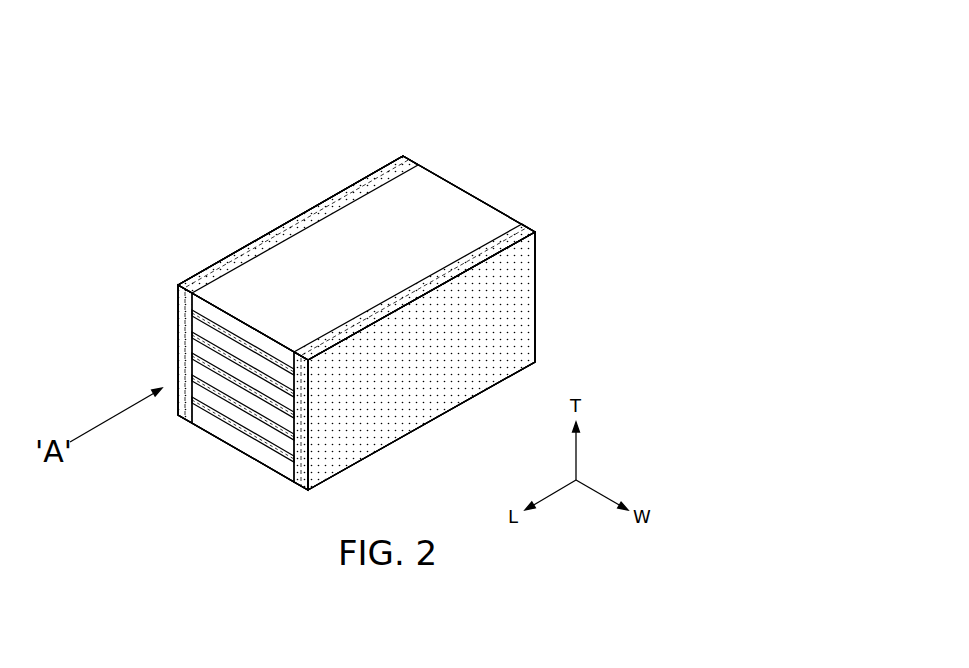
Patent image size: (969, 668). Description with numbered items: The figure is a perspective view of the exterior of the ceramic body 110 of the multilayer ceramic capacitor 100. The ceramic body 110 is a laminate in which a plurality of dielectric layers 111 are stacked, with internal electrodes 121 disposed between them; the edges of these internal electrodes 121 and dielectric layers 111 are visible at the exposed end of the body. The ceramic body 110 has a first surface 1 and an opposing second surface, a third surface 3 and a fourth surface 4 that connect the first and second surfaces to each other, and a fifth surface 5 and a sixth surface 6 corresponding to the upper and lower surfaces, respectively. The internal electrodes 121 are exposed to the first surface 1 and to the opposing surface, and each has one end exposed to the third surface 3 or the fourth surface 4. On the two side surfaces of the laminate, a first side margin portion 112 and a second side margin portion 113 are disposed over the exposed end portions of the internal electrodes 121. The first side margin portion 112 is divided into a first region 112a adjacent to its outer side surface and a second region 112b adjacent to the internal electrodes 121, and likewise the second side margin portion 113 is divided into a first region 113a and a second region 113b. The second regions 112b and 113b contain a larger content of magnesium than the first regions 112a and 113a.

The multilayer ceramic capacitor 100 is at (236, 82).
The ceramic body 110 is at (357, 227).
The dielectric layers 111 is at (180, 355).
The first internal electrode 121 is at (208, 323).
The first side margin portion 112 is at (218, 178).
The first region of the first side margin portion 112a is at (242, 253).
The second region of the first side margin portion 112b is at (223, 272).
The second side margin portion 113 is at (648, 113).
The first region of the second side margin portion 113a is at (530, 230).
The second region of the second side margin portion 113b is at (493, 237).
The first surface 1 is at (304, 242).
The third surface 3 is at (249, 411).
The fourth surface 4 is at (454, 209).
The fifth surface 5 is at (393, 197).
The sixth surface 6 is at (385, 422).